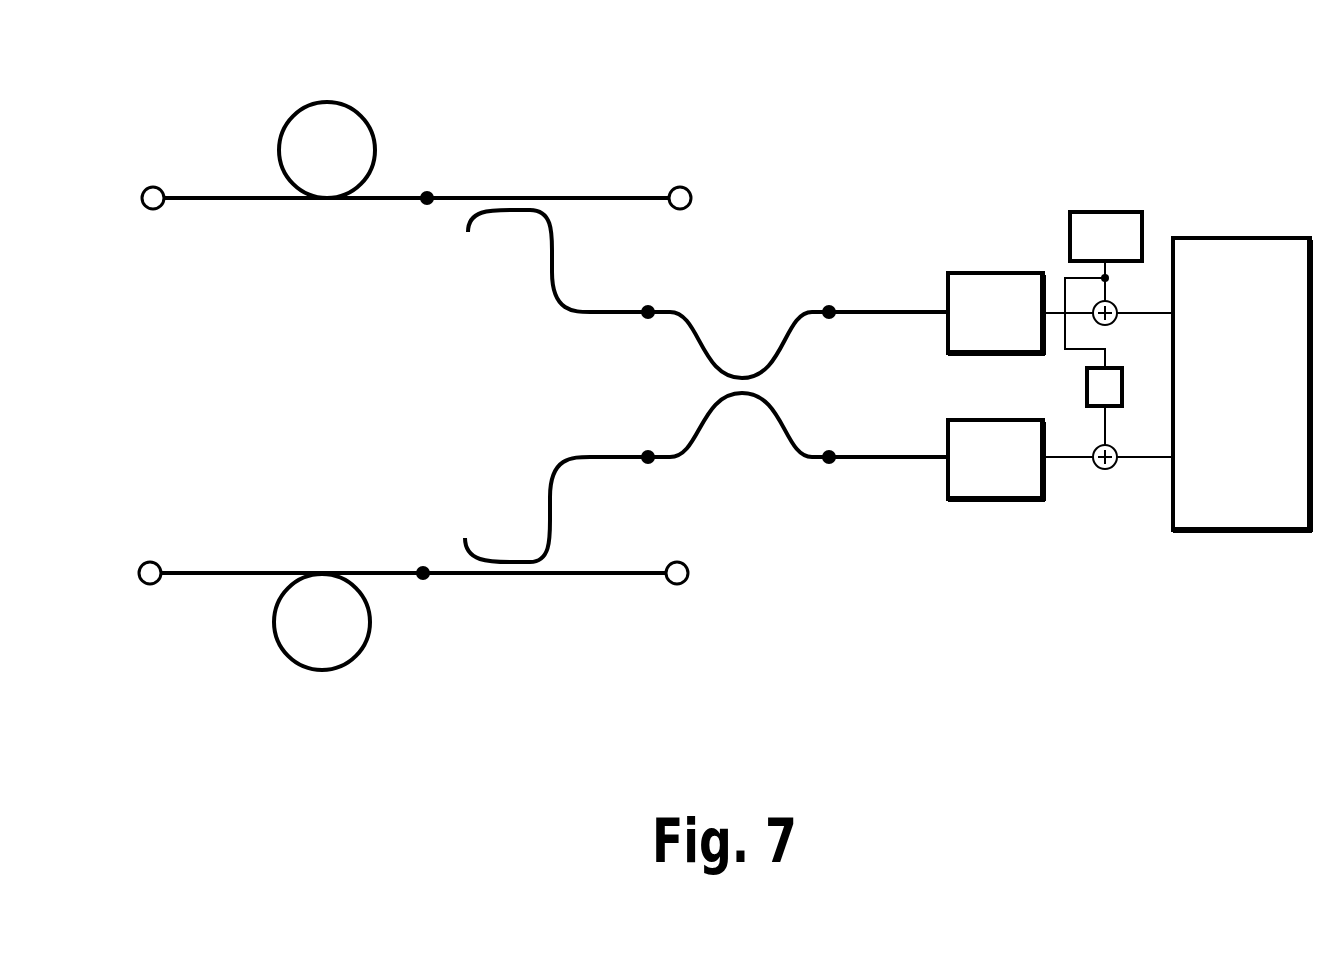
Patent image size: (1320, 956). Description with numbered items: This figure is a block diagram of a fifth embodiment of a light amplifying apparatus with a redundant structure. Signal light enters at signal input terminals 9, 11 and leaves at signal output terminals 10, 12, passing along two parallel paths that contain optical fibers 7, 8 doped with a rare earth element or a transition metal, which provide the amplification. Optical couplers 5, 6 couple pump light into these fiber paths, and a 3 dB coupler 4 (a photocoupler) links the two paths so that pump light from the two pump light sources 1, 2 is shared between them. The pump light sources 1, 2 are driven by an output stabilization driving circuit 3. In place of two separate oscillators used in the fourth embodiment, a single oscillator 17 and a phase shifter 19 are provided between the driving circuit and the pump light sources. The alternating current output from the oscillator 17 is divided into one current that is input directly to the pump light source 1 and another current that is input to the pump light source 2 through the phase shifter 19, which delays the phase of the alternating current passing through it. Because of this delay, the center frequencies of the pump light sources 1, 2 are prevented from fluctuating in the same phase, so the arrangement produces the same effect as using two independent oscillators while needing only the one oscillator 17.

The pump light source 1 is at (977, 273).
The pump light source 2 is at (990, 499).
The output stabilization driving circuit 3 is at (1222, 238).
The 3 dB coupler 4 is at (683, 310).
The optical coupler 5 is at (500, 196).
The optical coupler 6 is at (537, 573).
The optical fiber 7 is at (326, 102).
The optical fiber 8 is at (302, 667).
The signal input terminal 9 is at (160, 188).
The signal output terminal 10 is at (688, 188).
The signal input terminal 11 is at (158, 562).
The signal output terminal 12 is at (667, 585).
The oscillator 17 is at (1099, 212).
The phase shifter 19 is at (1124, 390).